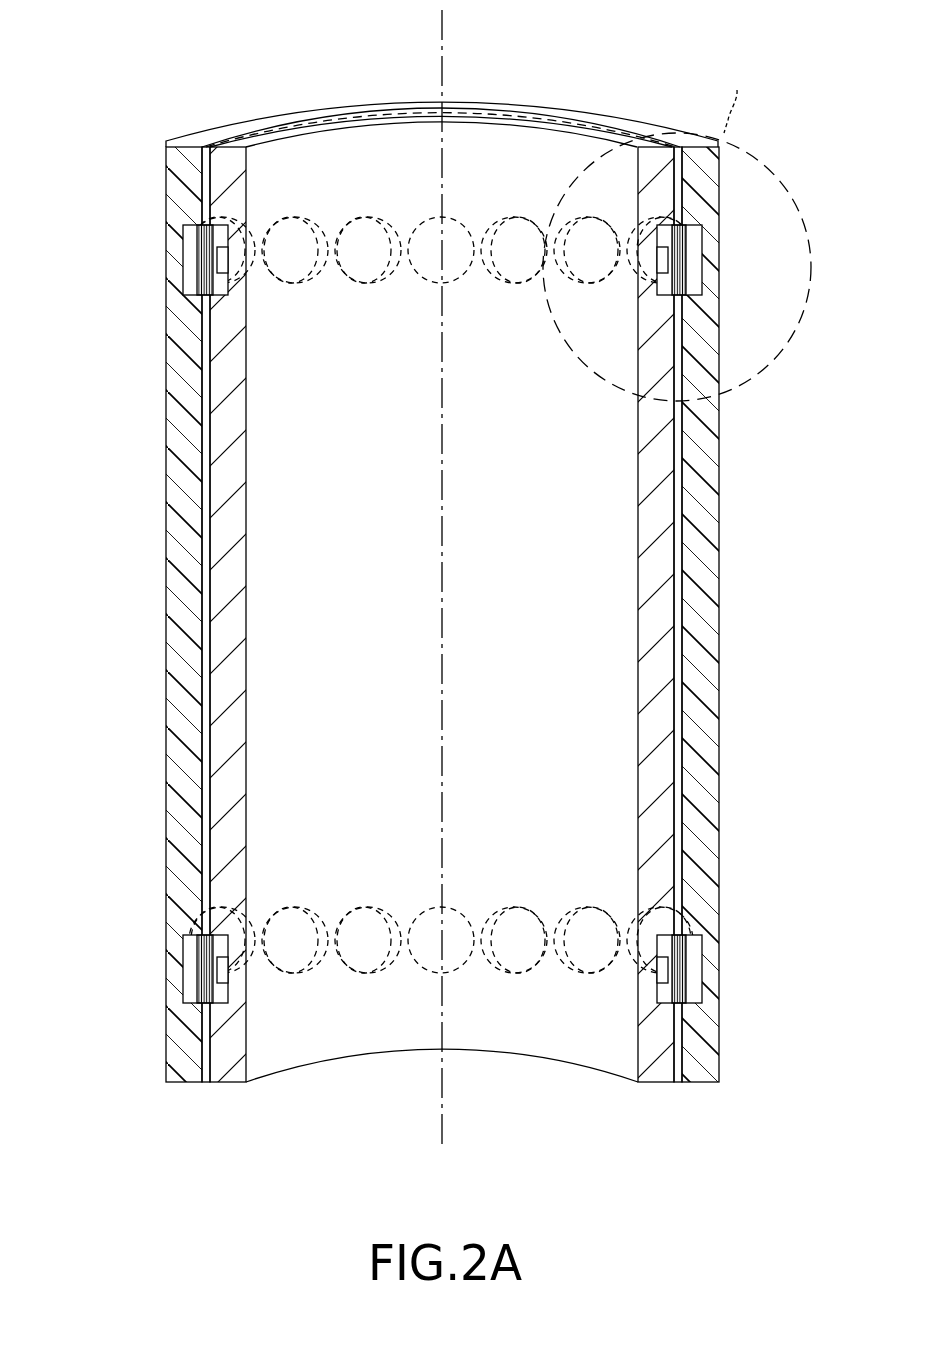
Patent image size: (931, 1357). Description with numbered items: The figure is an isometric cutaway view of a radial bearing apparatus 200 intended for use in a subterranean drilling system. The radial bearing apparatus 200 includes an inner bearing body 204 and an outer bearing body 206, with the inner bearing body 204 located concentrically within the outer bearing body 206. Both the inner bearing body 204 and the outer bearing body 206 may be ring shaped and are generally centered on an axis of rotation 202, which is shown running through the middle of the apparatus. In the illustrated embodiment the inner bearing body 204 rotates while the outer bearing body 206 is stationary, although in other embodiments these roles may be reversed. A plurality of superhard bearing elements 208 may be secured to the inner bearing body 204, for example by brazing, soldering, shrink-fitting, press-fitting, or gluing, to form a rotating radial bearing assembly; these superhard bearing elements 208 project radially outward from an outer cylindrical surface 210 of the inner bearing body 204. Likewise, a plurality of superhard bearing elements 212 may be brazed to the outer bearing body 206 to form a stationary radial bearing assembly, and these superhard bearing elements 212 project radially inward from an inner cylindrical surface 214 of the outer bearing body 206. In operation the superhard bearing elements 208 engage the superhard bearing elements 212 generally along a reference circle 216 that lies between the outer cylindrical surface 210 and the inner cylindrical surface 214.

The radial bearing apparatus 200 is at (98, 295).
The axis of rotation 202 is at (445, 36).
The inner bearing body 204 is at (660, 504).
The outer bearing body 206 is at (705, 500).
The superhard bearing elements 208 is at (222, 296).
The outer cylindrical surface 210 is at (213, 378).
The superhard bearing elements 212 is at (193, 252).
The inner cylindrical surface 214 is at (217, 157).
The reference circle 216 is at (291, 116).